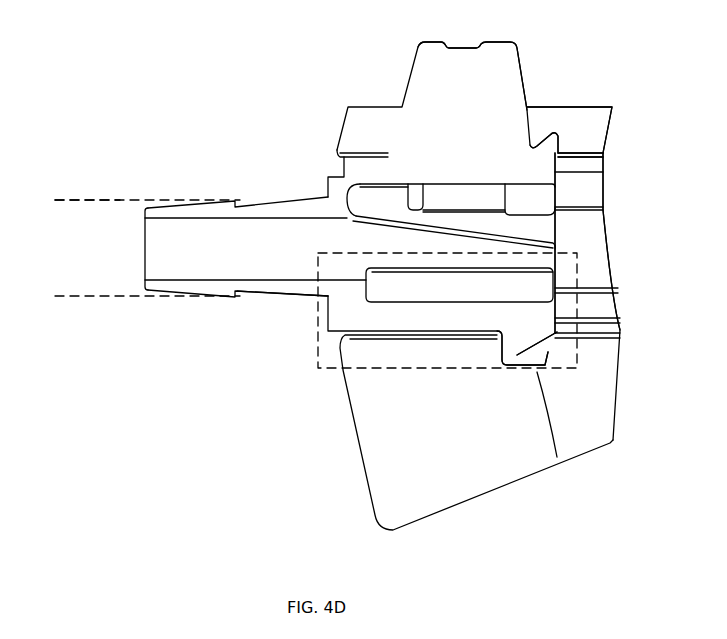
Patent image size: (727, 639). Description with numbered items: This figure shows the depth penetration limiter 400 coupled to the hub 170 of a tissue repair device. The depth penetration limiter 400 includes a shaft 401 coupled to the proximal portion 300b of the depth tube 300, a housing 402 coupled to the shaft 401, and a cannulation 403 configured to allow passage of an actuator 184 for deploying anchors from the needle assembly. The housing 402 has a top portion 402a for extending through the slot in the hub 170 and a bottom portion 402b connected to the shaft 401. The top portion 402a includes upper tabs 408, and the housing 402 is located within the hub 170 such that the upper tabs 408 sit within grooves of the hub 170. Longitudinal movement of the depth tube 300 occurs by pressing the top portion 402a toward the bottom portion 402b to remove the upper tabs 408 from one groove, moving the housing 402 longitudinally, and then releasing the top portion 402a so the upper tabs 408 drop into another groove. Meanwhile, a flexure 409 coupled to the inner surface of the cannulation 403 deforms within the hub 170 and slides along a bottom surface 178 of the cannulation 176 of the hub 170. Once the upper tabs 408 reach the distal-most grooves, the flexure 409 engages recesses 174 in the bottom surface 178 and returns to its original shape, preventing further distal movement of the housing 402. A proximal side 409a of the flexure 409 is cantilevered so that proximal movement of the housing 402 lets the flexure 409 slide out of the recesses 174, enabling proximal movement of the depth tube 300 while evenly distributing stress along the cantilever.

The depth tube 300 is at (98, 257).
The proximal portion of the depth tube 300b is at (97, 200).
The shaft 401 is at (208, 203).
The cannulation 403 is at (207, 263).
The depth penetration limiter 400 is at (291, 58).
The housing 402 is at (341, 180).
The top portion of the housing 402a is at (492, 82).
The bottom portion of the housing 402b is at (342, 313).
The actuator 184 is at (590, 180).
The upper tabs 408 is at (547, 163).
The cannulation of the hub 176 is at (595, 240).
The bottom surface of the cannulation 178 is at (620, 337).
The flexure 409 is at (532, 333).
The recesses 174 is at (537, 353).
The proximal side of the flexure 409a is at (557, 457).
The hub 170 is at (423, 485).